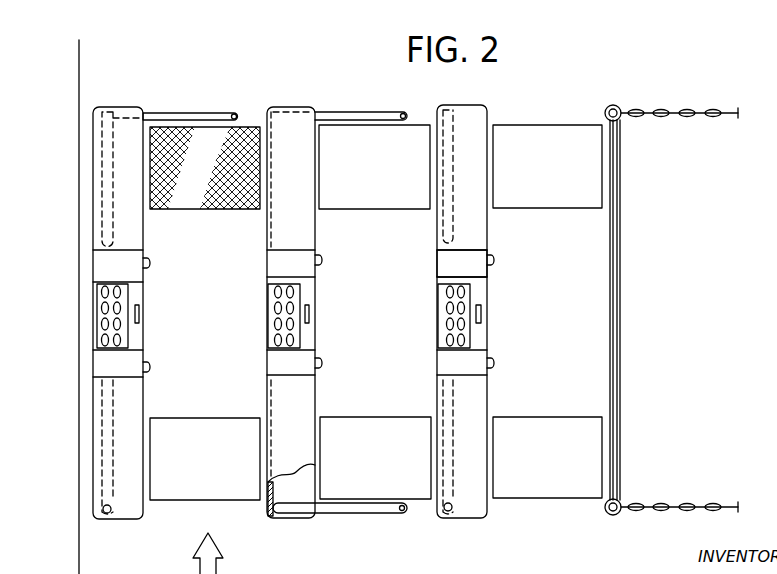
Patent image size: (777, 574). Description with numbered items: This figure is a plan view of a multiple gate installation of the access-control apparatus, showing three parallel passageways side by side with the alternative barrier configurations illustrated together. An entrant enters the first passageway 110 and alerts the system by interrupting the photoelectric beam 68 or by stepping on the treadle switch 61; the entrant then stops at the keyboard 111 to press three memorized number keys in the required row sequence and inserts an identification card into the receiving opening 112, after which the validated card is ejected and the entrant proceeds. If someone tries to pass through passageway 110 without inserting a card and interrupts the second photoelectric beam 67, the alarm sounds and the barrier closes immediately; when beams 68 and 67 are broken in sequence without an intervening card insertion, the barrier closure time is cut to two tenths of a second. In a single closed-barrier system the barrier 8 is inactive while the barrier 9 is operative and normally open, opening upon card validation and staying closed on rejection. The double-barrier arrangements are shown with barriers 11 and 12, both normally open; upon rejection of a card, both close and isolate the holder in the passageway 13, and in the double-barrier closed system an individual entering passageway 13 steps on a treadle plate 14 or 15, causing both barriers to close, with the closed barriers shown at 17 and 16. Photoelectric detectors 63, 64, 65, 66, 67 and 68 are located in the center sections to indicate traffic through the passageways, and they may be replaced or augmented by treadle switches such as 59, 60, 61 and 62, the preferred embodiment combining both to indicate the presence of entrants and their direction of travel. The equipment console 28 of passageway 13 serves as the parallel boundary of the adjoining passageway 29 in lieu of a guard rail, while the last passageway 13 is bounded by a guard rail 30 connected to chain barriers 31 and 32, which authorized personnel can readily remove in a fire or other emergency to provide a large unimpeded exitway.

The barrier 8 is at (113, 492).
The barrier 9 is at (108, 118).
The barrier 11 is at (455, 122).
The barrier 12 is at (460, 500).
The passageway 13 is at (560, 335).
The treadle plate 14 is at (560, 500).
The treadle plate 15 is at (560, 125).
The closed barrier 16 is at (347, 113).
The closed barrier 17 is at (358, 513).
The equipment console 28 is at (446, 262).
The passageway 29 is at (372, 334).
The guard rail 30 is at (622, 305).
The chain barrier 31 is at (662, 503).
The chain barrier 32 is at (665, 120).
The treadle switch 59 is at (368, 205).
The treadle switch 60 is at (375, 425).
The treadle switch 61 is at (177, 425).
The treadle switch 62 is at (190, 205).
The photoelectric detector 63 is at (492, 260).
The photoelectric detector 64 is at (492, 362).
The photoelectric detector 65 is at (320, 260).
The photoelectric detector 66 is at (322, 364).
The photoelectric beam 67 is at (148, 262).
The photoelectric beam 68 is at (148, 367).
The passageway 110 is at (210, 335).
The keyboard 111 is at (105, 298).
The receiving opening 112 is at (137, 306).